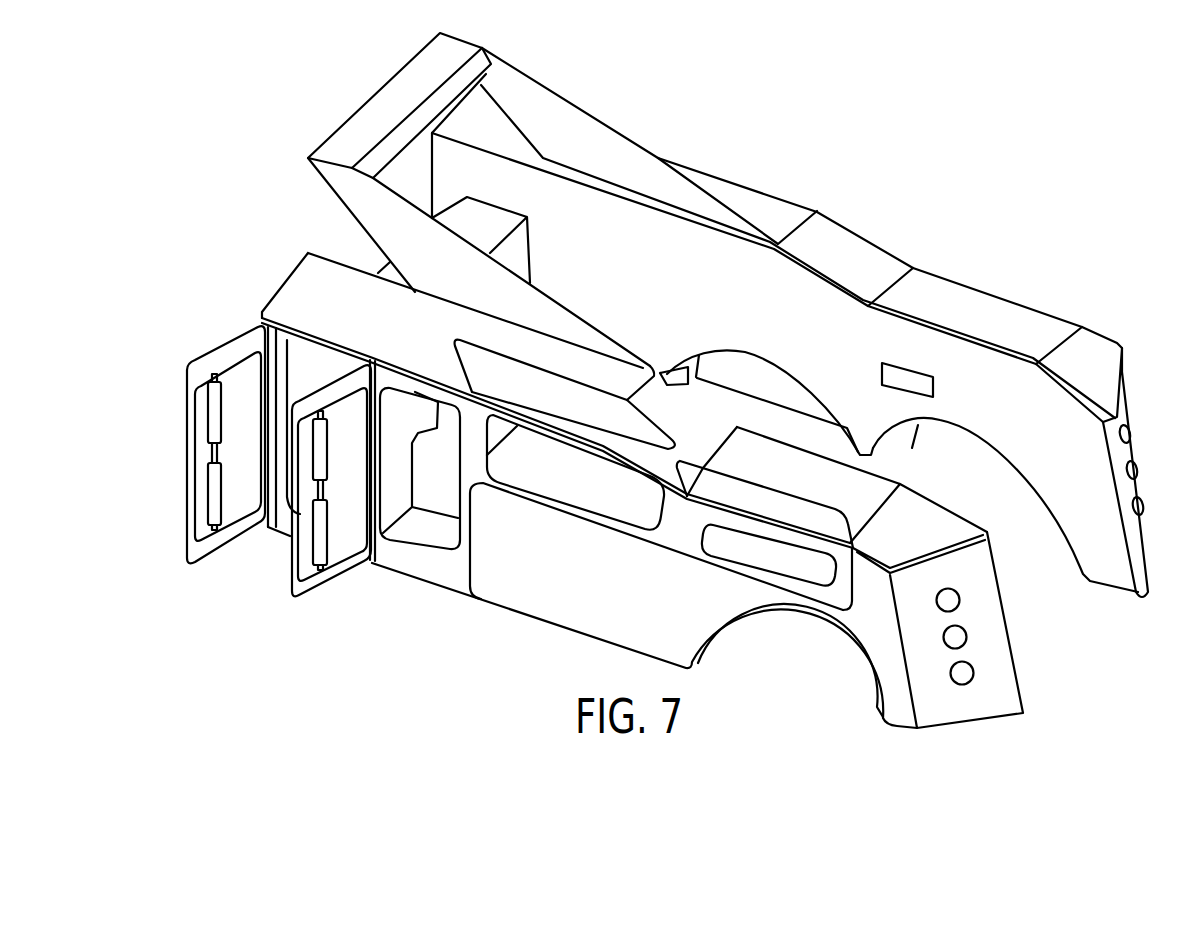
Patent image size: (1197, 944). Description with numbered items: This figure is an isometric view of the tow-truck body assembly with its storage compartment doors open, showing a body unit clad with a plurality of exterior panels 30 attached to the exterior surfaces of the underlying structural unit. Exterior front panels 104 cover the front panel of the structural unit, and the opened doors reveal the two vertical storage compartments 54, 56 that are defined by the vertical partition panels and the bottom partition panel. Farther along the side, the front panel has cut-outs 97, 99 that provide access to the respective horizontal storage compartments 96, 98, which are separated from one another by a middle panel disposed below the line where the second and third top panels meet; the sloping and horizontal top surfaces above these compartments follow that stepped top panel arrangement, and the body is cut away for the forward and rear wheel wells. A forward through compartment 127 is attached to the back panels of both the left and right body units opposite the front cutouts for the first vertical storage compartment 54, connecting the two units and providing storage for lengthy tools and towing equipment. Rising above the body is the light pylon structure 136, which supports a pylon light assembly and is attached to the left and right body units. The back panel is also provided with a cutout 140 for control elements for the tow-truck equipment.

The exterior panels 30 is at (705, 315).
The vertical storage compartment 54 is at (276, 530).
The vertical storage compartment 56 is at (444, 506).
The horizontal storage compartment 96 is at (570, 492).
The cut-out 97 is at (614, 527).
The horizontal storage compartment 98 is at (790, 563).
The cut-out 99 is at (834, 600).
The exterior front panels 104 is at (605, 523).
The forward through compartment 127 is at (466, 221).
The light pylon structure 136 is at (560, 115).
The cutout 140 is at (914, 382).